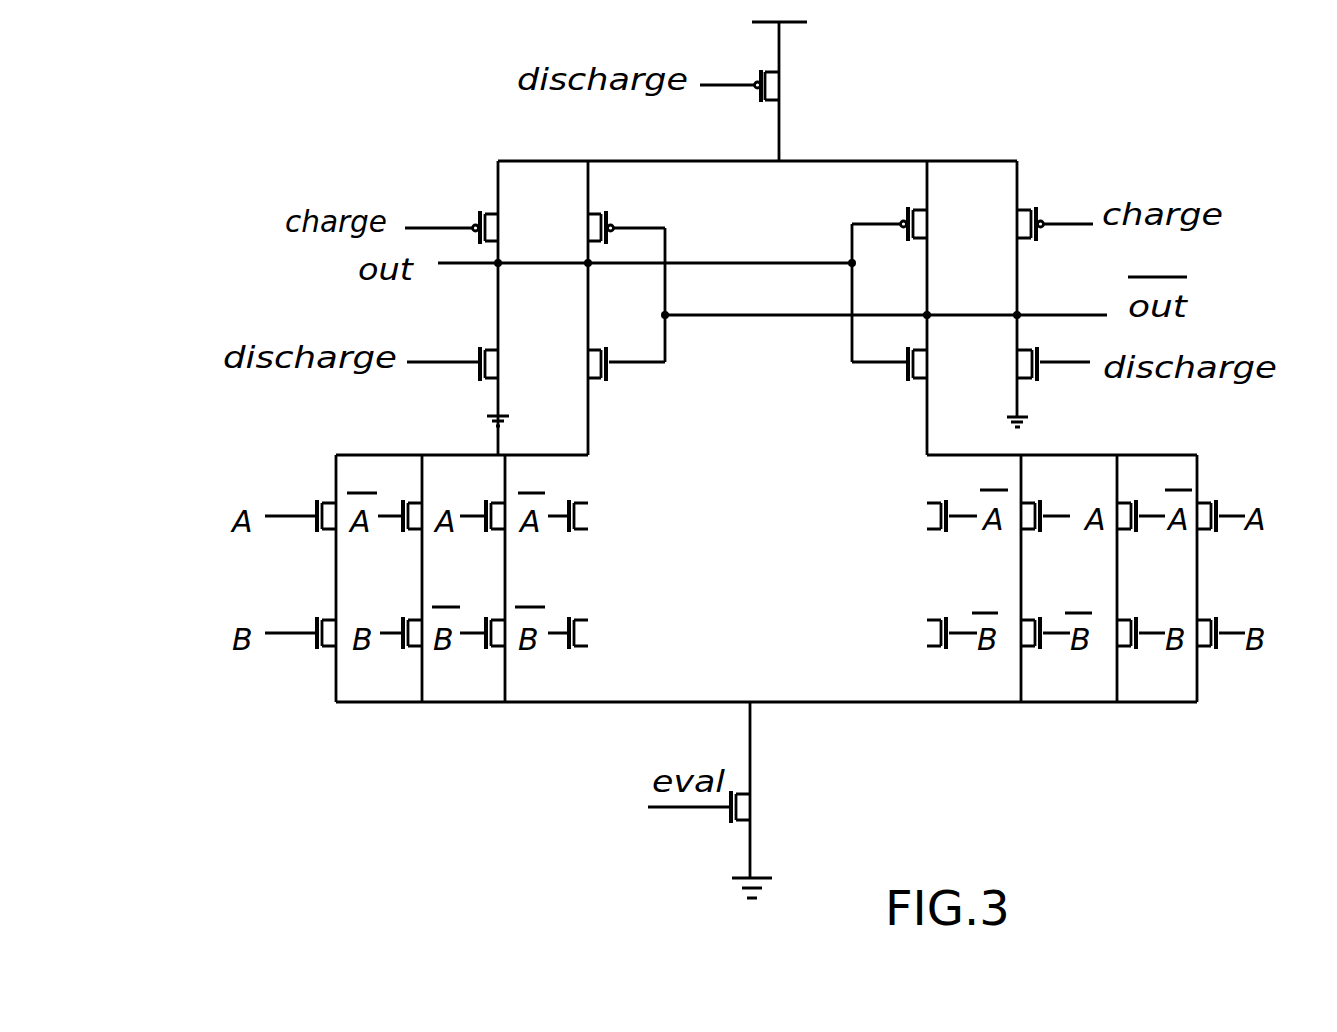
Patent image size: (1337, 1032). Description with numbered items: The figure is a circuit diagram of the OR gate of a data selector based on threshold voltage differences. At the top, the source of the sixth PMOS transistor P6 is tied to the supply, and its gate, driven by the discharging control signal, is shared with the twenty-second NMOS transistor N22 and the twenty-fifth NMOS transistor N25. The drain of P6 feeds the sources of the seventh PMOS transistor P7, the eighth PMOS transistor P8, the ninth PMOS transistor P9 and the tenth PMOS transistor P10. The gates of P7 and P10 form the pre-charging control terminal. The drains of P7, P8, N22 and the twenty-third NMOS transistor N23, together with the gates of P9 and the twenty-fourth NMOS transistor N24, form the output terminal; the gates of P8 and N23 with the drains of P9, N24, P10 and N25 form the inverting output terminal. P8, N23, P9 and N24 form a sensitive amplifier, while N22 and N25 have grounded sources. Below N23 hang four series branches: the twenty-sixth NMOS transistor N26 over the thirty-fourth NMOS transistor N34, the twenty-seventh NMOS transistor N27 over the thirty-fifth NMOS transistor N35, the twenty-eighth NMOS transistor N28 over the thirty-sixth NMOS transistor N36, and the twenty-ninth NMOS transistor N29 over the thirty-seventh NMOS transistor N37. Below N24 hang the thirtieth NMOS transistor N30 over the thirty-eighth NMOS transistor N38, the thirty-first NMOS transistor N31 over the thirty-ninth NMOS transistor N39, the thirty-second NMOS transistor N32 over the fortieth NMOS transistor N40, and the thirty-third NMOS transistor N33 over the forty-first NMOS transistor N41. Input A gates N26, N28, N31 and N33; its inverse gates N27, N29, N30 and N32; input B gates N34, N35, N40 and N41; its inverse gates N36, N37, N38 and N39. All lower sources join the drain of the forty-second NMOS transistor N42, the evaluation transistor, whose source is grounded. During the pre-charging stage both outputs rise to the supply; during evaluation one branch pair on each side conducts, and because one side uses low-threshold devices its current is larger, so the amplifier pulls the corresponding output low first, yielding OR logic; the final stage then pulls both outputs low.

The sixth PMOS transistor P6 is at (786, 91).
The seventh PMOS transistor P7 is at (506, 227).
The eighth PMOS transistor P8 is at (584, 227).
The ninth PMOS transistor P9 is at (932, 224).
The tenth PMOS transistor P10 is at (1008, 224).
The twenty-second NMOS transistor N22 is at (467, 380).
The twenty-third NMOS transistor N23 is at (624, 380).
The twenty-fourth NMOS transistor N24 is at (895, 380).
The twenty-fifth NMOS transistor N25 is at (1050, 380).
The twenty-sixth NMOS transistor N26 is at (304, 539).
The twenty-seventh NMOS transistor N27 is at (390, 539).
The twenty-eighth NMOS transistor N28 is at (474, 539).
The twenty-ninth NMOS transistor N29 is at (558, 539).
The thirtieth NMOS transistor N30 is at (959, 539).
The thirty-first NMOS transistor N31 is at (1053, 539).
The thirty-second NMOS transistor N32 is at (1150, 539).
The thirty-third NMOS transistor N33 is at (1230, 539).
The thirty-fourth NMOS transistor N34 is at (306, 654).
The thirty-fifth NMOS transistor N35 is at (392, 654).
The thirty-sixth NMOS transistor N36 is at (474, 654).
The thirty-seventh NMOS transistor N37 is at (560, 654).
The thirty-eighth NMOS transistor N38 is at (959, 655).
The thirty-ninth NMOS transistor N39 is at (1053, 655).
The fortieth NMOS transistor N40 is at (1150, 655).
The forty-first NMOS transistor N41 is at (1232, 655).
The forty-second NMOS transistor N42 is at (771, 807).